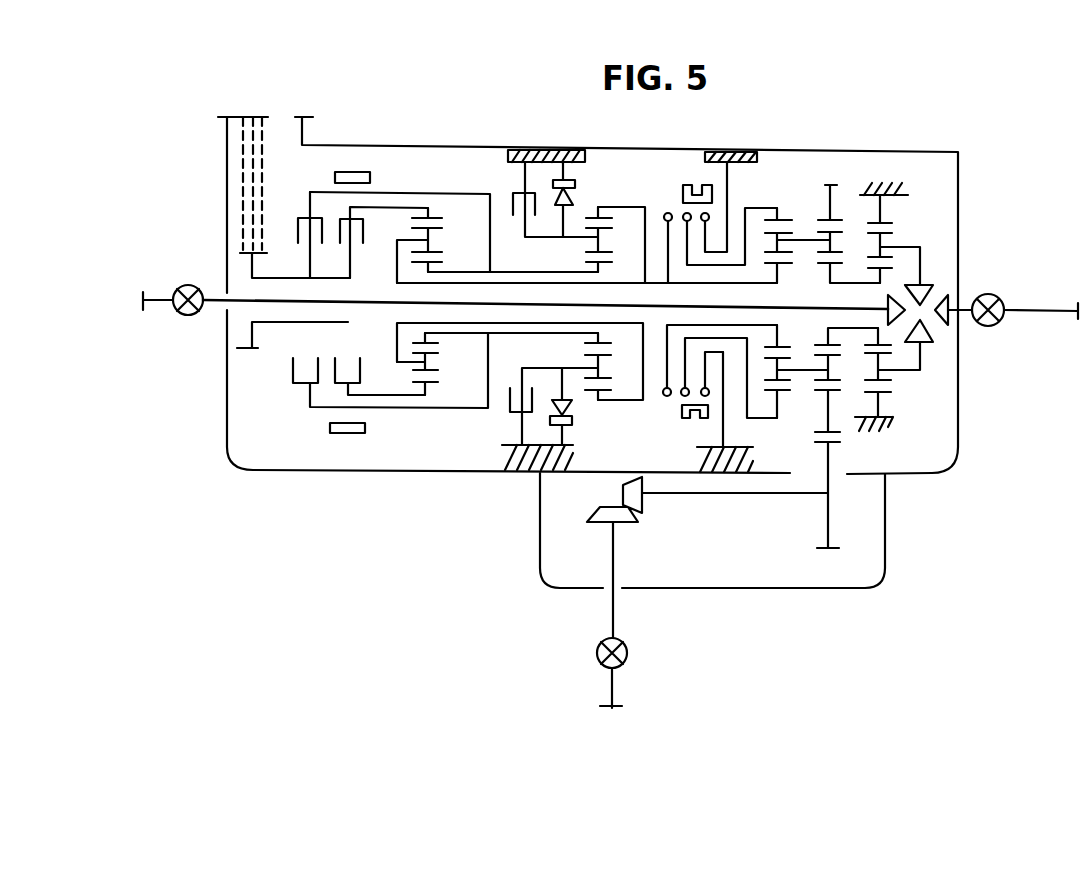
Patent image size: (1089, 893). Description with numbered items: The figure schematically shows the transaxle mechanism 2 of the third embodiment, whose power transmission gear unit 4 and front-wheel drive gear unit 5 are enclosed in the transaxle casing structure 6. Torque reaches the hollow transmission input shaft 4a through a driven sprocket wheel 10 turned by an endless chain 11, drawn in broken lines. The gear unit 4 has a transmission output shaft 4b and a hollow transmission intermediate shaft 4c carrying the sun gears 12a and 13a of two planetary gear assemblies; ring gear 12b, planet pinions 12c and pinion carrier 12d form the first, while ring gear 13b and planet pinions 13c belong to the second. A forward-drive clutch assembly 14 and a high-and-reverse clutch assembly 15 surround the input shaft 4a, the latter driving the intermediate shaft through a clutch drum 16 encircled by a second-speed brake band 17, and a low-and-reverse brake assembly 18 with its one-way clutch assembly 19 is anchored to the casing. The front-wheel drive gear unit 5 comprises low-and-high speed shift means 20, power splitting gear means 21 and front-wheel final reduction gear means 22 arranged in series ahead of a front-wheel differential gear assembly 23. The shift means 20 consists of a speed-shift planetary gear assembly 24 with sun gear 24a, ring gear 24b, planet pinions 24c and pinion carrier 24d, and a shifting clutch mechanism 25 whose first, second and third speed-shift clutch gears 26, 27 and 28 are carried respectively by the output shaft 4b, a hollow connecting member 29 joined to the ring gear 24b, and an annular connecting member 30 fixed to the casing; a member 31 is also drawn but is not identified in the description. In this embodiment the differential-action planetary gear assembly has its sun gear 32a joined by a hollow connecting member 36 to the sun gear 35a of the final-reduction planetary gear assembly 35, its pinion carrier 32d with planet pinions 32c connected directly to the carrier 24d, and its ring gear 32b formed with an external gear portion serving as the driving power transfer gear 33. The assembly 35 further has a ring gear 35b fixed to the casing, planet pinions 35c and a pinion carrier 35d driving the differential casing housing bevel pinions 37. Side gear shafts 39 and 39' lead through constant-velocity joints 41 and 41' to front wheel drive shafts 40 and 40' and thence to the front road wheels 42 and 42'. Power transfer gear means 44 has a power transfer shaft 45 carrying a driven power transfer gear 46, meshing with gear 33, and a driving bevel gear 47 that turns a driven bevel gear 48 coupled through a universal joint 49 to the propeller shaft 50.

The transaxle mechanism 2 is at (402, 525).
The power transmission gear unit 4 is at (396, 180).
The transmission input shaft 4a is at (277, 323).
The transmission output shaft 4b is at (390, 323).
The transmission intermediate shaft 4c is at (507, 337).
The front-wheel drive gear unit 5 is at (950, 501).
The transaxle casing structure 6 is at (339, 146).
The driven sprocket wheel 10 is at (255, 263).
The endless chain 11 is at (245, 170).
The sun gear 12a is at (442, 262).
The ring gear 12b is at (442, 220).
The planet pinions 12c is at (438, 362).
The first pinion carrier 12d is at (398, 239).
The sun gear 13a is at (586, 262).
The ring gear 13b is at (590, 217).
The planet pinions 13c is at (603, 372).
The forward-drive clutch assembly 14 is at (337, 391).
The high-and-reverse clutch assembly 15 is at (288, 387).
The clutch drum 16 is at (400, 410).
The second-speed brake band 17 is at (345, 434).
The low-and-reverse brake assembly 18 is at (503, 185).
The one-way clutch assembly 19 is at (542, 180).
The low-and-high speed shift means 20 is at (737, 150).
The power splitting gear means 21 is at (839, 143).
The front-wheel final reduction gear means 22 is at (931, 143).
The front-wheel differential gear assembly 23 is at (937, 368).
The speed-shift planetary gear assembly 24 is at (790, 151).
The sun gear 24a is at (782, 347).
The ring gear 24b is at (787, 220).
The planet pinions 24c is at (781, 234).
The pinion carrier 24d is at (787, 380).
The low-and-high speed shifting clutch mechanism 25 is at (690, 168).
The first speed-shift clutch gear 26 is at (662, 395).
The second speed-shift clutch gear 27 is at (682, 397).
The third speed-shift clutch gear 28 is at (703, 398).
The hollow connecting member 29 is at (737, 417).
The annular connecting member 30 is at (728, 182).
The actuator 31 is at (683, 193).
The sun gear 32a is at (832, 263).
The ring gear 32b is at (823, 217).
The planet pinions 32c is at (833, 235).
The pinion carrier 32d is at (816, 382).
The driving power transfer gear 33 is at (882, 440).
The final-reduction planetary gear assembly 35 is at (882, 172).
The sun gear 35a is at (890, 270).
The ring gear 35b is at (886, 219).
The planet pinions 35c is at (881, 384).
The pinion carrier 35d is at (896, 246).
The hollow connecting member 36 is at (869, 353).
The bevel pinions 37 is at (923, 284).
The side gear shaft 39 is at (542, 320).
The side gear shaft 39' is at (968, 330).
The front wheel drive shaft 40 is at (158, 287).
The front wheel drive shaft 40' is at (1041, 296).
The constant-velocity joint 41 is at (177, 318).
The constant-velocity joint 41' is at (999, 329).
The front road wheel 42 is at (874, 306).
The front road wheel 42' is at (916, 332).
The power transfer gear means 44 is at (725, 567).
The power transfer shaft 45 is at (715, 496).
The driven power transfer gear 46 is at (826, 520).
The driving bevel gear 47 is at (640, 508).
The driven bevel gear 48 is at (600, 523).
The universal joint 49 is at (625, 642).
The propeller shaft 50 is at (612, 687).